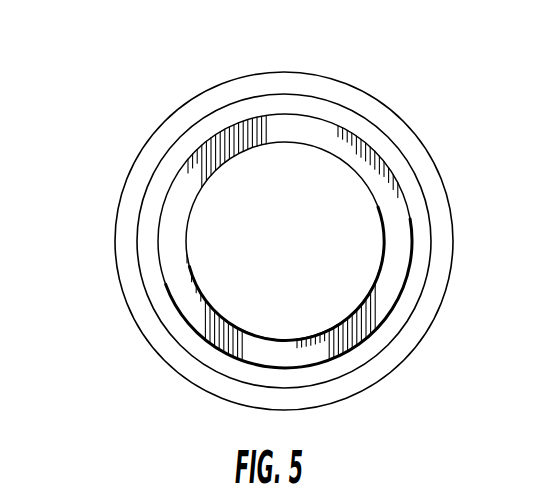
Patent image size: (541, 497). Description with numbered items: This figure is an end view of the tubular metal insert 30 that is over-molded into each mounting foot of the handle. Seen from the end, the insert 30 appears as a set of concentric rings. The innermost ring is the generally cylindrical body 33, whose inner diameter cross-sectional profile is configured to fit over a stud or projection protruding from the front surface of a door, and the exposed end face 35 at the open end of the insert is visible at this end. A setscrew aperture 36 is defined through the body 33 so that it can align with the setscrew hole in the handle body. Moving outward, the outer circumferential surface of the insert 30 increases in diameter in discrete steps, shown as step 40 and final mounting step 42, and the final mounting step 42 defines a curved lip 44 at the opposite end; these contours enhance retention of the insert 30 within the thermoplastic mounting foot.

The tubular metal insert 30 is at (200, 76).
The body 33 is at (404, 199).
The exposed end face 35 is at (313, 137).
The setscrew aperture 36 is at (489, 7).
The step 40 is at (168, 161).
The final mounting step 42 is at (444, 266).
The curved lip 44 is at (421, 139).